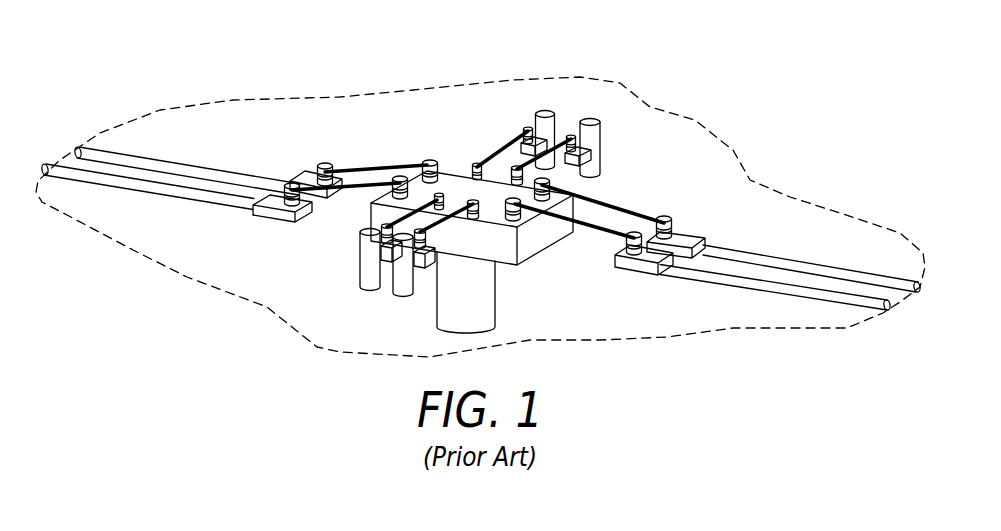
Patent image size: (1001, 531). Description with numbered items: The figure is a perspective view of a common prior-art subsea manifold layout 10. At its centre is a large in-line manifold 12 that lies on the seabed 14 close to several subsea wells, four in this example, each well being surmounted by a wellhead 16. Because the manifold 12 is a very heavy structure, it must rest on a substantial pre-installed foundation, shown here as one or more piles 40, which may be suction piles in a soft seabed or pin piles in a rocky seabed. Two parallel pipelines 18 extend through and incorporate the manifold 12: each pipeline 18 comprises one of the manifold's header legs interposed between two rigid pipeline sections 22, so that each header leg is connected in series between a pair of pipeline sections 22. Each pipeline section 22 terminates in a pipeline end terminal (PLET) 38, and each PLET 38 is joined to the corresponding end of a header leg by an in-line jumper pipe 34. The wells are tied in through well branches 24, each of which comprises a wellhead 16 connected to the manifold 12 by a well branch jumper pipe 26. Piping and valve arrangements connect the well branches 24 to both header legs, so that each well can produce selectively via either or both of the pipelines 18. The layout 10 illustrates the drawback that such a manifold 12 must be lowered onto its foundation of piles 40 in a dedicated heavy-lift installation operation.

The subsea manifold layout 10 is at (268, 54).
The in-line manifold 12 is at (528, 251).
The seabed 14 is at (185, 279).
The wellheads 16 is at (588, 121).
The pipelines 18 is at (854, 252).
The pipeline sections 22 is at (214, 172).
The well branches 24 is at (505, 120).
The well branch jumper pipe 26 is at (492, 148).
The in-line jumper pipes 34 is at (375, 163).
The pipeline end terminal (PLET) 38 is at (309, 172).
The piles 40 is at (488, 312).